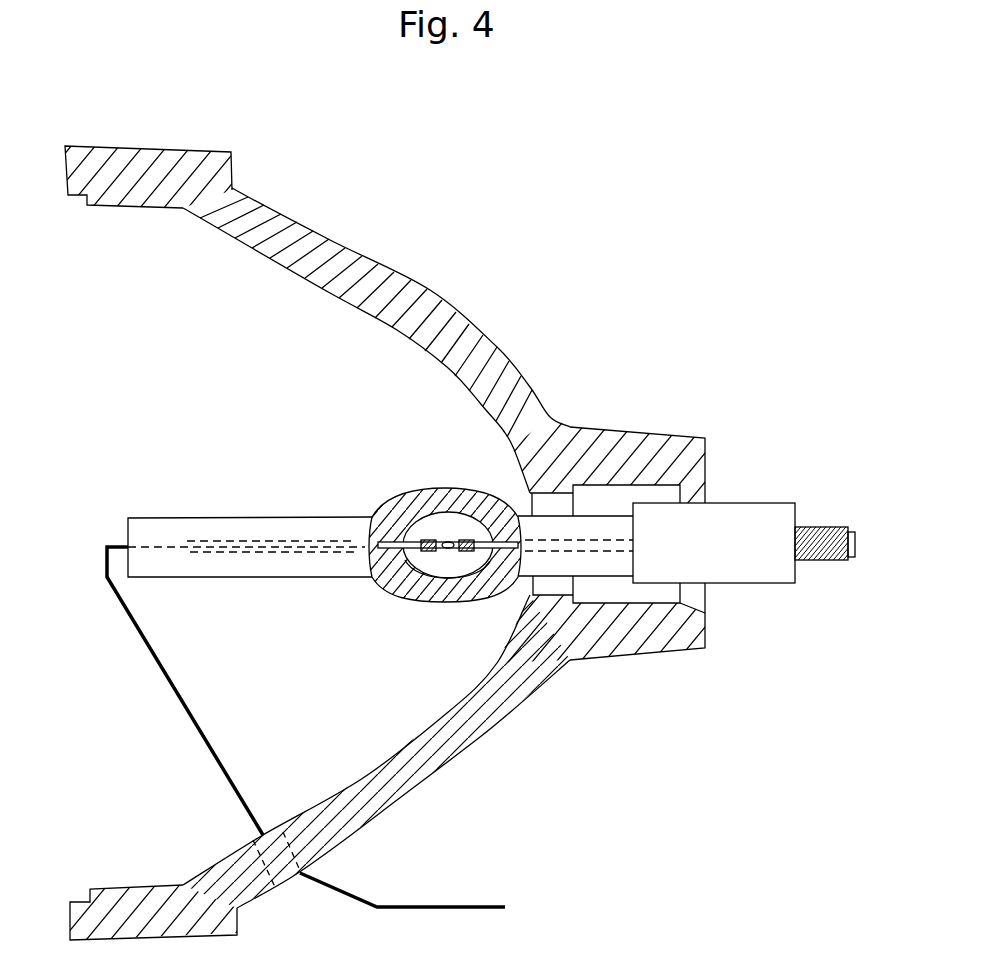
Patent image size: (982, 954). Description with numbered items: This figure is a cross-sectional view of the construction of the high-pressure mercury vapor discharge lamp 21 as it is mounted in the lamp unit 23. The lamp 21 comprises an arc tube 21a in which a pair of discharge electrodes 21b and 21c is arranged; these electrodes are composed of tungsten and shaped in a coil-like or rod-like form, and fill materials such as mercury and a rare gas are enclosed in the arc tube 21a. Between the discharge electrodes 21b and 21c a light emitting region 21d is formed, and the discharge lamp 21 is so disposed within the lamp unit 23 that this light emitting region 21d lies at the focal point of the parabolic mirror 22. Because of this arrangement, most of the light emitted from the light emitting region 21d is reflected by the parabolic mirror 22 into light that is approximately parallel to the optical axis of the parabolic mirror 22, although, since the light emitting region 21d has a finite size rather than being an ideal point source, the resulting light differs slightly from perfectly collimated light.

The high-pressure mercury vapor discharge lamp 21 is at (370, 645).
The arc tube 21a is at (403, 505).
The discharge electrode 21b is at (420, 590).
The discharge electrode 21c is at (478, 588).
The light emitting region 21d is at (447, 540).
The parabolic mirror 22 is at (323, 234).
The lamp unit 23 is at (619, 198).